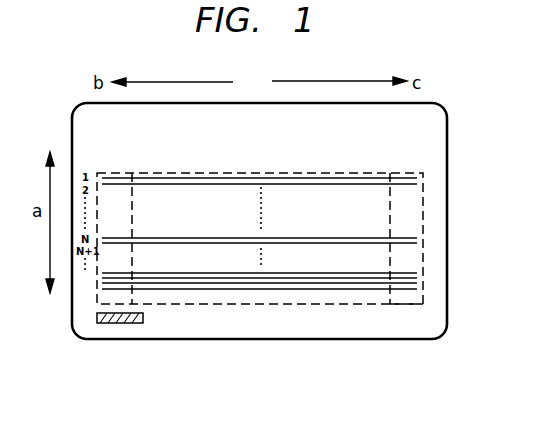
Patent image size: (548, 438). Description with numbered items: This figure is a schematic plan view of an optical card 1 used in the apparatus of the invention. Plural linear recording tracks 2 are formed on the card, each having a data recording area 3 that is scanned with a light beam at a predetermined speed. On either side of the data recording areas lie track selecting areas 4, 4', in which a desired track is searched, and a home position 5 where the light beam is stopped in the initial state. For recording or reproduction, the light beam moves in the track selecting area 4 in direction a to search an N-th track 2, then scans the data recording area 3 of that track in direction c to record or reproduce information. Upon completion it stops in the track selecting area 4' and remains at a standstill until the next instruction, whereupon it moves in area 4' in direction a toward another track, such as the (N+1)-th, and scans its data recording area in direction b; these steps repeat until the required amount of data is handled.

The optical card 1 is at (440, 127).
The linear recording track 2 is at (405, 235).
The data recording area 3 is at (218, 198).
The track selecting area 4 is at (229, 259).
The track selecting area 4' is at (441, 312).
The home position 5 is at (122, 323).